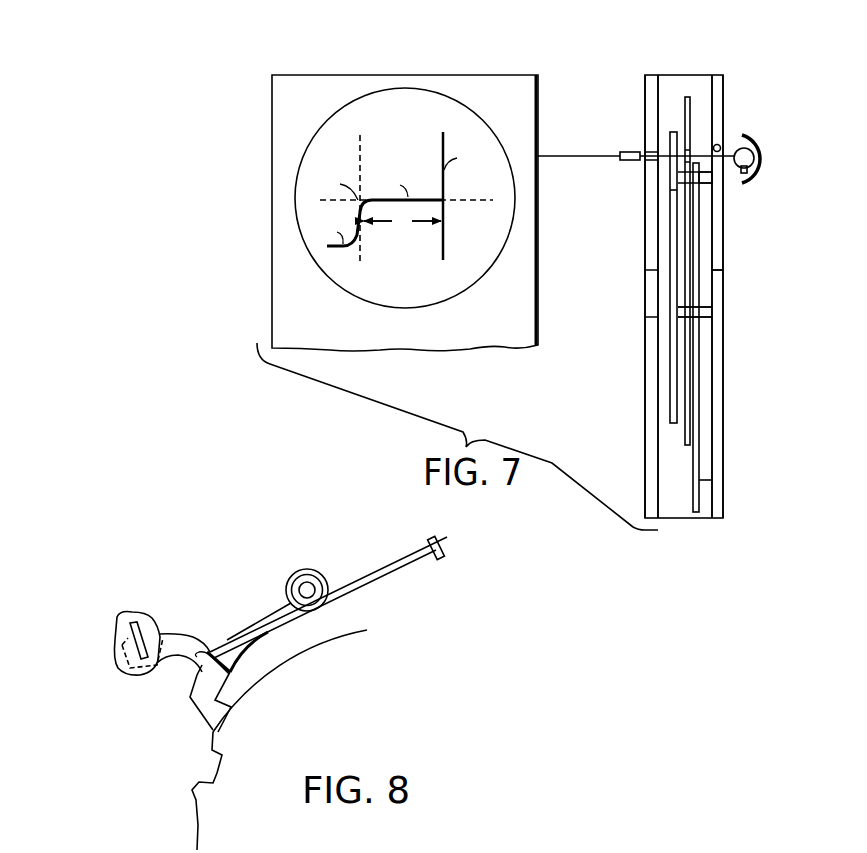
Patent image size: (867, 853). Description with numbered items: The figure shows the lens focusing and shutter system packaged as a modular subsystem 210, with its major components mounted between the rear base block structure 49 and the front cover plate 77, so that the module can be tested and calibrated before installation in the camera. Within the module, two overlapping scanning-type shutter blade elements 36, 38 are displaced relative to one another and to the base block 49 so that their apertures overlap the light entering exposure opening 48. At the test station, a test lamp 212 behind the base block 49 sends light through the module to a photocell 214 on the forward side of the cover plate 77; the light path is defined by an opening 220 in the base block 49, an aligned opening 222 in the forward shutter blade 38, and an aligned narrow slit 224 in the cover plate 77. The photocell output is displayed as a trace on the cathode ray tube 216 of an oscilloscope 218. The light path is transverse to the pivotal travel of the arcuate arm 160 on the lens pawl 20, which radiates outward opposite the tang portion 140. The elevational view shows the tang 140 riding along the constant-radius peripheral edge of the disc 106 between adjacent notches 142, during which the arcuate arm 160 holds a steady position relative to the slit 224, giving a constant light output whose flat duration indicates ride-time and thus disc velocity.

In FIG. 7, the modular subsystem 210 is at (701, 68).
In FIG. 7, the oscilloscope 218 is at (272, 155).
In FIG. 7, the cathode ray tube 216 is at (337, 122).
In FIG. 7, the photocell 214 is at (623, 162).
In FIG. 7, the cover plate 77 is at (645, 358).
In FIG. 8, the cover plate 77 is at (143, 617).
In FIG. 7, the narrow slit 224 is at (650, 152).
In FIG. 8, the narrow slit 224 is at (128, 637).
In FIG. 7, the arcuate arm 160 is at (675, 132).
In FIG. 8, the arcuate arm 160 is at (177, 643).
In FIG. 7, the tang portion 140 is at (673, 195).
In FIG. 8, the tang portion 140 is at (213, 713).
In FIG. 8, the notches 142 is at (210, 770).
In FIG. 7, the shutter blade element 38 is at (688, 445).
In FIG. 7, the shutter blade element 36 is at (700, 480).
In FIG. 7, the aligned opening 222 is at (692, 157).
In FIG. 7, the opening 220 is at (720, 146).
In FIG. 7, the test lamp 212 is at (752, 157).
In FIG. 7, the lens pawl 20 is at (707, 181).
In FIG. 8, the lens pawl 20 is at (237, 614).
In FIG. 7, the base block structure 49 is at (722, 238).
In FIG. 7, the exposure opening 48 is at (718, 285).
In FIG. 7, the disc 106 is at (703, 313).
In FIG. 8, the disc 106 is at (338, 643).